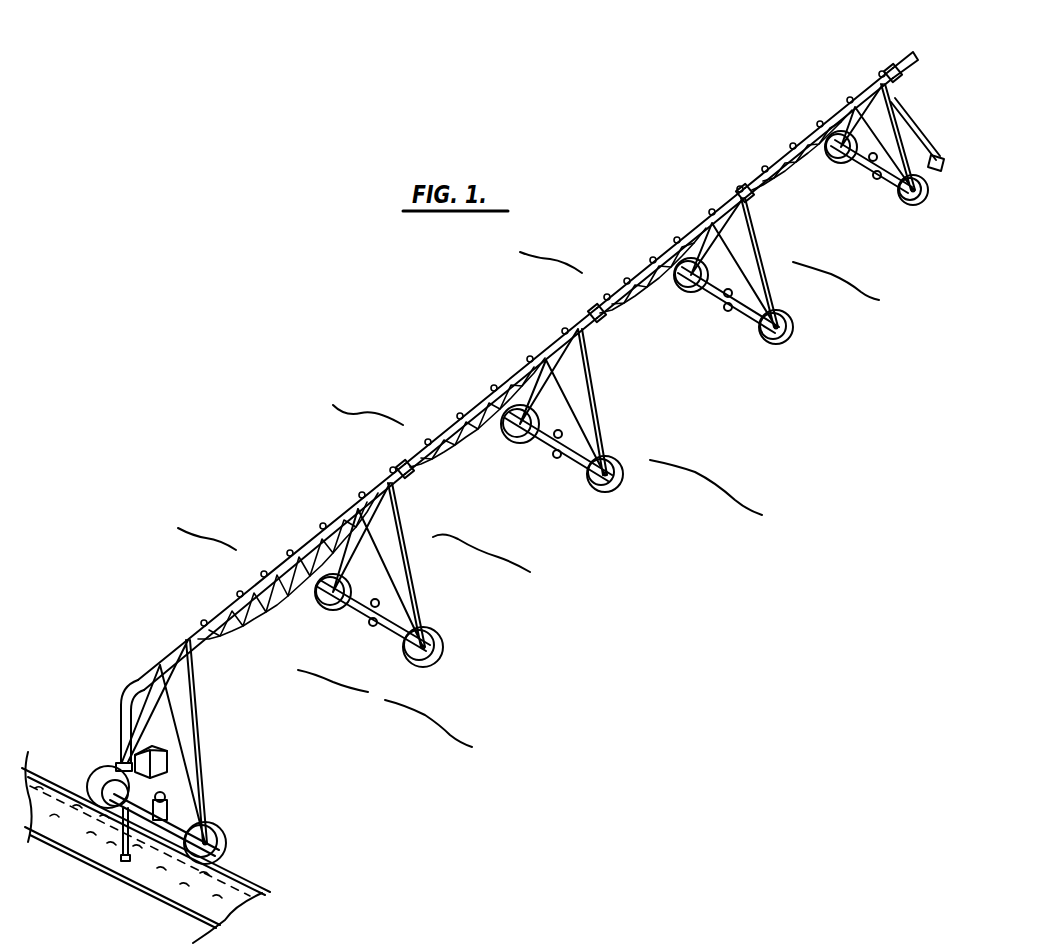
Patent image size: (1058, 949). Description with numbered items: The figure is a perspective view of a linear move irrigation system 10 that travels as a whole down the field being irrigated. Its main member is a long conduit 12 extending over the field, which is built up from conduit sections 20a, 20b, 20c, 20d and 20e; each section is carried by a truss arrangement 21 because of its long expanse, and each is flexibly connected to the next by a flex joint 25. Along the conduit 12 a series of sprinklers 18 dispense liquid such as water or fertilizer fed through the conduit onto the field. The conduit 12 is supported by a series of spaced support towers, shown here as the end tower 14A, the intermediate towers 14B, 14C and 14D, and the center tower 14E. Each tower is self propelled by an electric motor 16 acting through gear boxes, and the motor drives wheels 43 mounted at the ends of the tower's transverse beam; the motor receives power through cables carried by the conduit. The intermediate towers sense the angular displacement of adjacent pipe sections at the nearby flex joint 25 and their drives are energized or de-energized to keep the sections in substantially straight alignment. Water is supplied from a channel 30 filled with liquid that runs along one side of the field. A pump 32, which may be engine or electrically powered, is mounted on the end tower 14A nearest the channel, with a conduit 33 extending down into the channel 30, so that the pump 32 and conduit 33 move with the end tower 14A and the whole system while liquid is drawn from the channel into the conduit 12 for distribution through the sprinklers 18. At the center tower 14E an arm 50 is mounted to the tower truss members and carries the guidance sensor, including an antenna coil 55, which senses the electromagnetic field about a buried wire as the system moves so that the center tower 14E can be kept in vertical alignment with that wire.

The irrigation system 10 is at (436, 345).
The conduit 12 is at (527, 357).
The end tower 14A is at (216, 744).
The intermediate tower 14B is at (422, 586).
The intermediate tower 14C is at (608, 432).
The intermediate tower 14D is at (742, 323).
The center tower 14E is at (879, 193).
The electric motor 16 is at (168, 808).
The sprinklers 18 is at (263, 575).
The conduit section 20a is at (217, 619).
The conduit section 20b is at (497, 383).
The conduit section 20c is at (697, 225).
The conduit section 20d is at (838, 101).
The conduit section 20e is at (937, 24).
The truss arrangement 21 is at (244, 632).
The flex joint 25 is at (404, 459).
The channel 30 is at (227, 889).
The pump 32 is at (90, 782).
The conduit 33 is at (116, 858).
The wheels 43 is at (840, 164).
The arm 50 is at (914, 134).
The antenna coil 55 is at (938, 171).